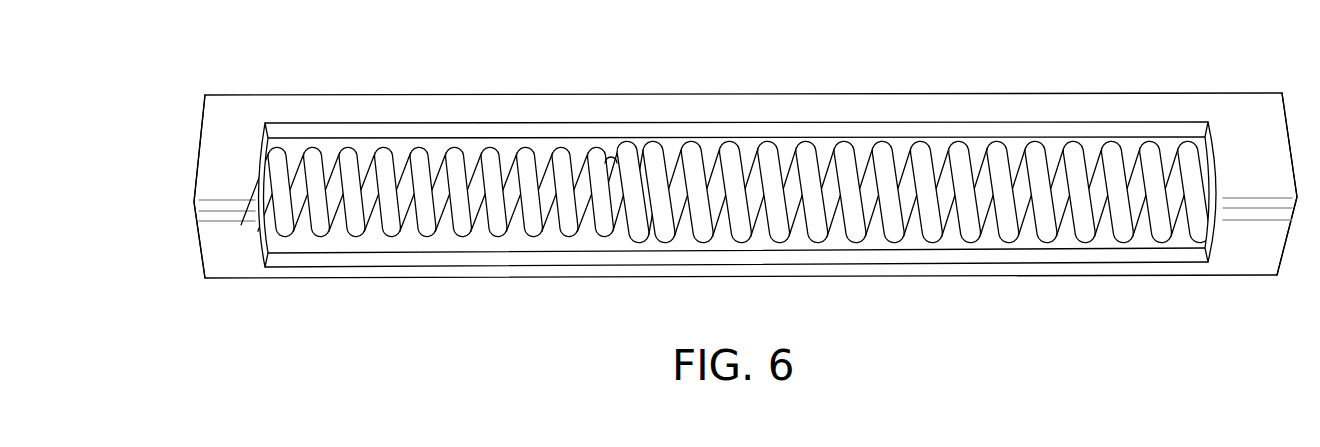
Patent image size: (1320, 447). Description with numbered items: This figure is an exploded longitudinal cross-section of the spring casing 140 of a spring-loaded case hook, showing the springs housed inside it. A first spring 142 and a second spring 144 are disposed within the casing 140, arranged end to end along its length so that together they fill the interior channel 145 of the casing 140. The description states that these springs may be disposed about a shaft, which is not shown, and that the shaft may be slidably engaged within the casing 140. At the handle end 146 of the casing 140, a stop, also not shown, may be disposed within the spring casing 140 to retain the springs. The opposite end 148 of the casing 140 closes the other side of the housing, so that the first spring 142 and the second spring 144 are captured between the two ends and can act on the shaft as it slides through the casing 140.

The spring casing 140 is at (762, 92).
The first spring 142 is at (895, 231).
The second spring 144 is at (462, 226).
The spring channel 145 is at (335, 120).
The handle end 146 is at (240, 118).
The second end block 148 is at (1257, 120).